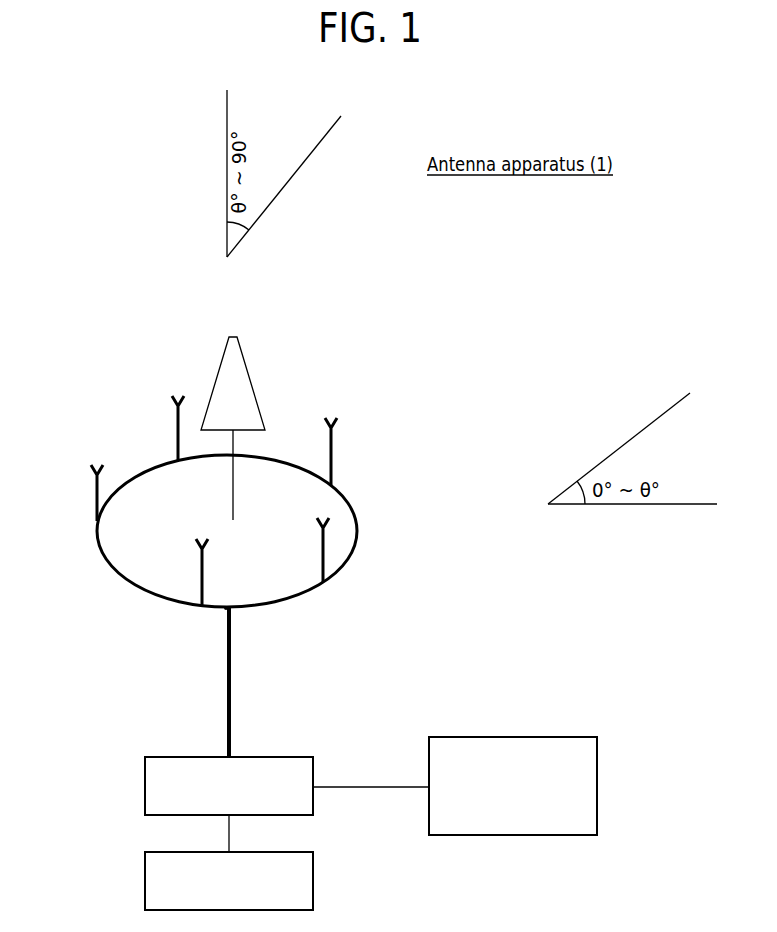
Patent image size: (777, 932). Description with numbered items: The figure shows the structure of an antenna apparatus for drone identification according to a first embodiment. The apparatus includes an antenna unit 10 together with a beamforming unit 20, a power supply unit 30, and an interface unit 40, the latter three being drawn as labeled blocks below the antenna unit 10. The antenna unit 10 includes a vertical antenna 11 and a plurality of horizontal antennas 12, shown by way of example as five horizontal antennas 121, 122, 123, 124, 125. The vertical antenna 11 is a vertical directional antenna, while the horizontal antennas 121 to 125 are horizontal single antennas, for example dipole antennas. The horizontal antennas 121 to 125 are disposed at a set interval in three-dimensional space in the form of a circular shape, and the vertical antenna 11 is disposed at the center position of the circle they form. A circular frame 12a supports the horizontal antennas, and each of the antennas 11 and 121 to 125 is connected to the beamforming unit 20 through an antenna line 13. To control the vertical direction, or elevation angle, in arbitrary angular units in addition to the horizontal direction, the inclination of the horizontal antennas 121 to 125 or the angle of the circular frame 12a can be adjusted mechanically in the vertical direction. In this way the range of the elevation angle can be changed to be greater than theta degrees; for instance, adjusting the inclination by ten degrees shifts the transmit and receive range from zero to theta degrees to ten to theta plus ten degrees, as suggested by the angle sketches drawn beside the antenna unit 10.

The antenna unit 10 is at (328, 318).
The vertical antenna 11 is at (254, 380).
The horizontal antenna 12 is at (400, 483).
The circular frame 12a is at (225, 612).
The horizontal antenna 121 is at (200, 548).
The horizontal antenna 122 is at (327, 523).
The horizontal antenna 123 is at (338, 423).
The horizontal antenna 124 is at (171, 405).
The horizontal antenna 125 is at (90, 473).
The antenna line 13 is at (232, 682).
The beamforming unit 20 is at (144, 786).
The power supply unit 30 is at (144, 881).
The interface unit 40 is at (598, 787).